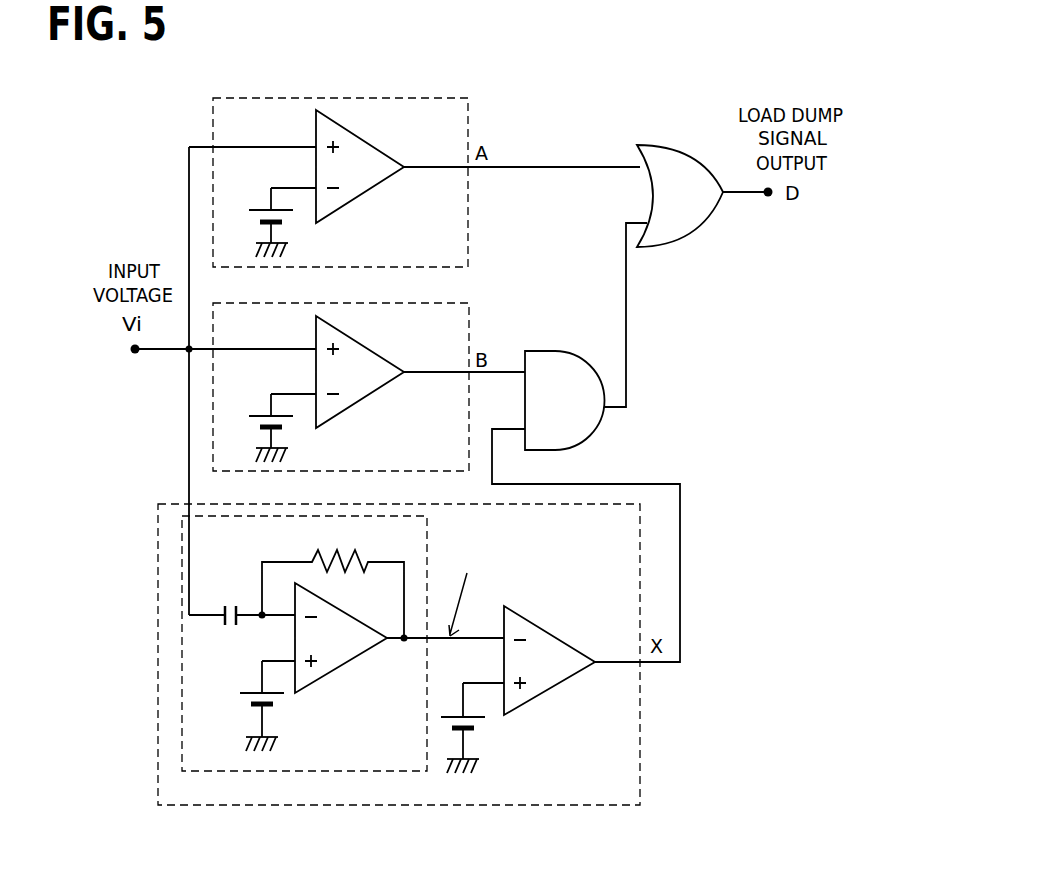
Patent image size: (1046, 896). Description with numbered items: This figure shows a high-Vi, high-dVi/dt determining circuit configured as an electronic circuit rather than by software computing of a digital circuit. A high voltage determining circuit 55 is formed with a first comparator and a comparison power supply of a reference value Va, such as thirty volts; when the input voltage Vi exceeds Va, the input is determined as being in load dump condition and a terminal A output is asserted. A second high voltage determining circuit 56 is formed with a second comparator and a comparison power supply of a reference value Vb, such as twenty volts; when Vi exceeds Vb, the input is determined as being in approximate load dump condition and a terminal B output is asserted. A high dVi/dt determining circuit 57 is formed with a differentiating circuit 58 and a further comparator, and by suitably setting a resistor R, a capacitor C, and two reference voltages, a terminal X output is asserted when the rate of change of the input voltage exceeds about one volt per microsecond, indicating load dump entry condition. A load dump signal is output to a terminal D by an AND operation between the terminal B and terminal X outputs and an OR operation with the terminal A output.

The high voltage determining circuit 55 is at (438, 97).
The high voltage determining circuit 56 is at (438, 303).
The high dVi/dt determining circuit 57 is at (437, 683).
The differentiating circuit 58 is at (344, 773).